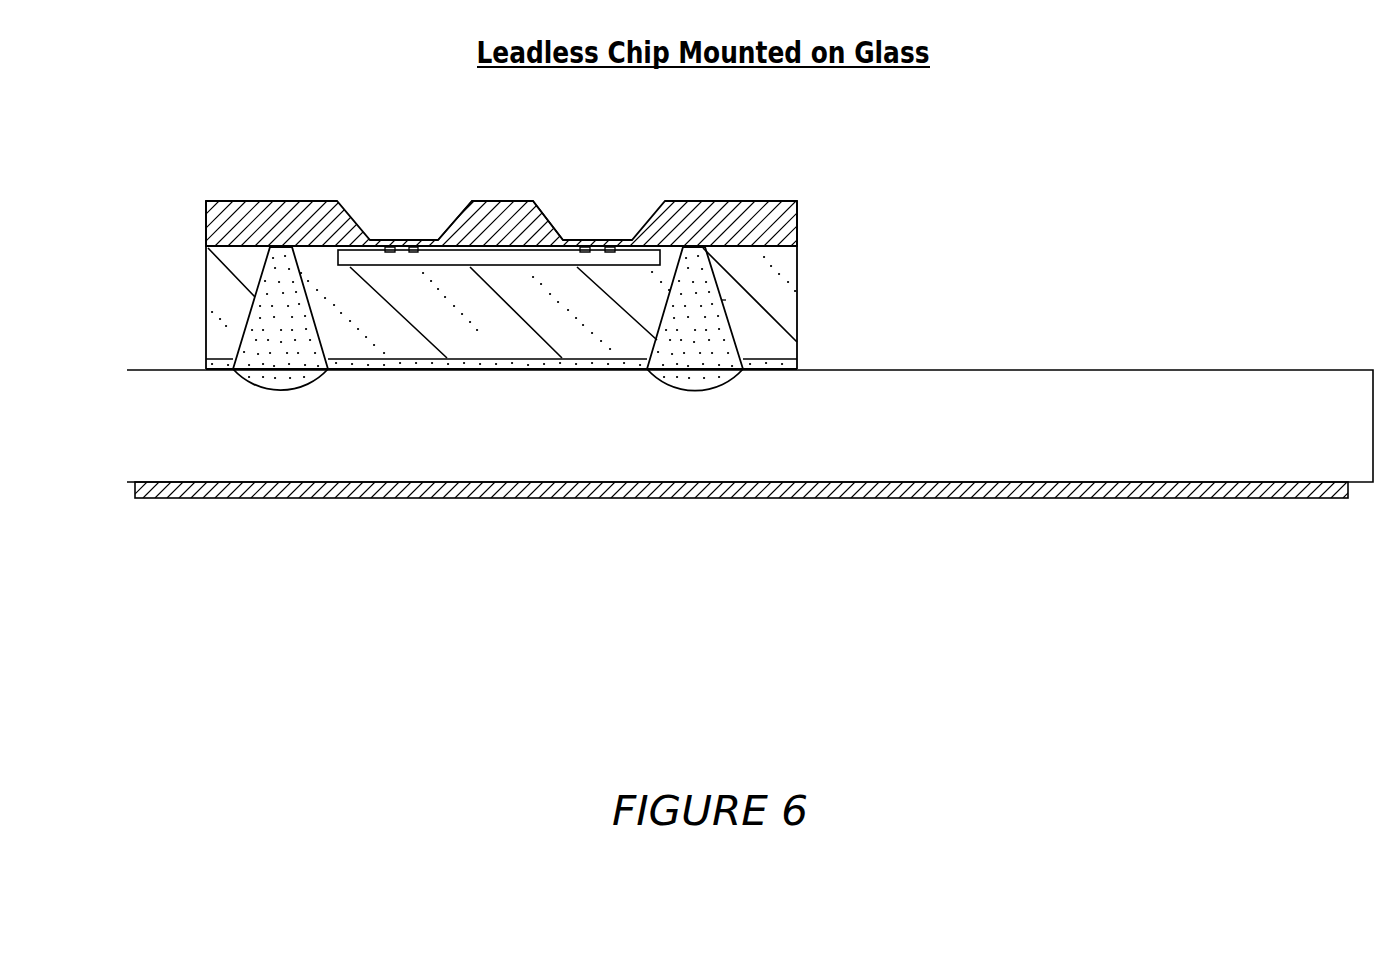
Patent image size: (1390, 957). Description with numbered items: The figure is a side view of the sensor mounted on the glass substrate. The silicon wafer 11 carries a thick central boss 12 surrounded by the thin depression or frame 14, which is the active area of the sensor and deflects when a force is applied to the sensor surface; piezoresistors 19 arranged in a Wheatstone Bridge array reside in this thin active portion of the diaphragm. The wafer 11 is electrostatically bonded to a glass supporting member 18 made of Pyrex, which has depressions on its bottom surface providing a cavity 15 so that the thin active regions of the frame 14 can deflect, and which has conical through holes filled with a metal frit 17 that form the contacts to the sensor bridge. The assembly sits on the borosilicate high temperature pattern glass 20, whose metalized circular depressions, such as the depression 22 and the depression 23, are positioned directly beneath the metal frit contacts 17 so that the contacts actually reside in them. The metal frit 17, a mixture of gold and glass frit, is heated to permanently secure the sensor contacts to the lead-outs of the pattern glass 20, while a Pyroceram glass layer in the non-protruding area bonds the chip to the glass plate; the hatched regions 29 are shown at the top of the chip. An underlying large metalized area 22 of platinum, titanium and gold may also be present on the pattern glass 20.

The wafer 11 is at (204, 221).
The central boss 12 is at (510, 201).
The frame 14 is at (591, 232).
The cavity 15 is at (663, 255).
The metal frit 17 is at (795, 320).
The glass supporting member 18 is at (204, 292).
The piezoresistors 19 is at (414, 247).
The high temperature pattern glass 20 is at (1102, 385).
The circular depression 22 is at (697, 392).
The circular depression 23 is at (282, 392).
The top metallization blocks 29 is at (265, 201).